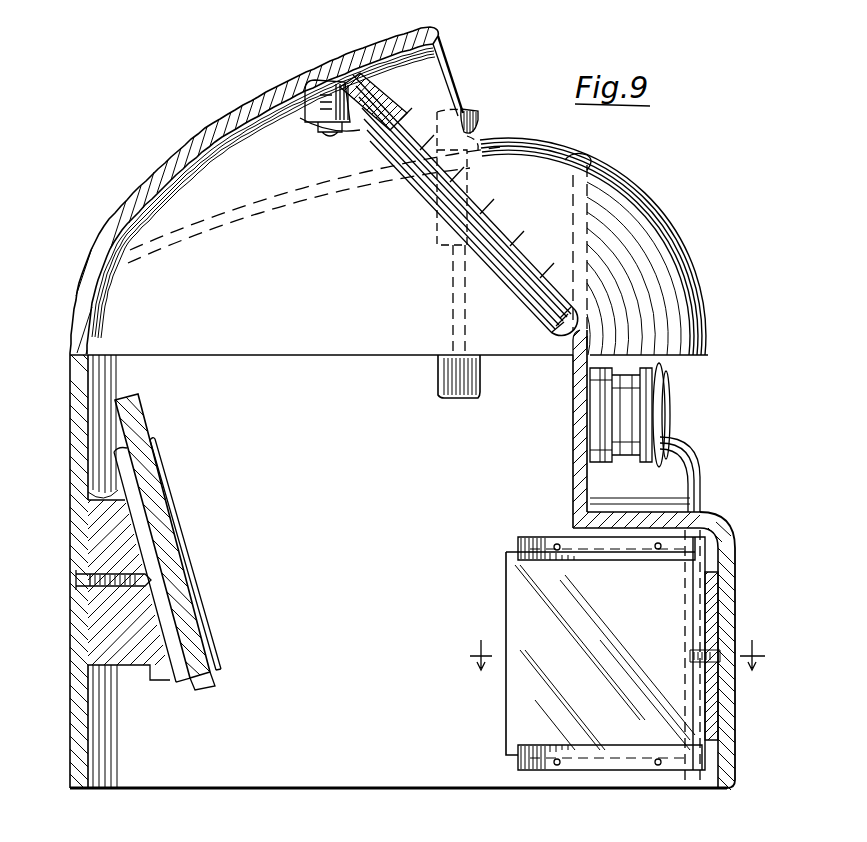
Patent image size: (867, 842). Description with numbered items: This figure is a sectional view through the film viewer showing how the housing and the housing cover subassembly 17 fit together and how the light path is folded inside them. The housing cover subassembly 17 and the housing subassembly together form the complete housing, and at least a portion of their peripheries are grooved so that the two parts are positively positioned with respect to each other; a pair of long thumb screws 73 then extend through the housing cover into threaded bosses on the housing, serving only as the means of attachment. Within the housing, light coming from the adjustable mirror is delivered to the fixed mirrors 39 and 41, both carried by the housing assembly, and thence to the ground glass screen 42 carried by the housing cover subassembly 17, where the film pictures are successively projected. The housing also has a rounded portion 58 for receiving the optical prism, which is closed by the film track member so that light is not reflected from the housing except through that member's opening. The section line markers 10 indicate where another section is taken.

The section line 10- 10 is at (624, 650).
The housing cover subassembly 17 is at (699, 262).
The fixed mirror 39 is at (508, 722).
The fixed mirror 41 is at (143, 425).
The ground glass screen 42 is at (428, 188).
The rounded portion 58 is at (731, 528).
The thumb screws 73 is at (468, 110).